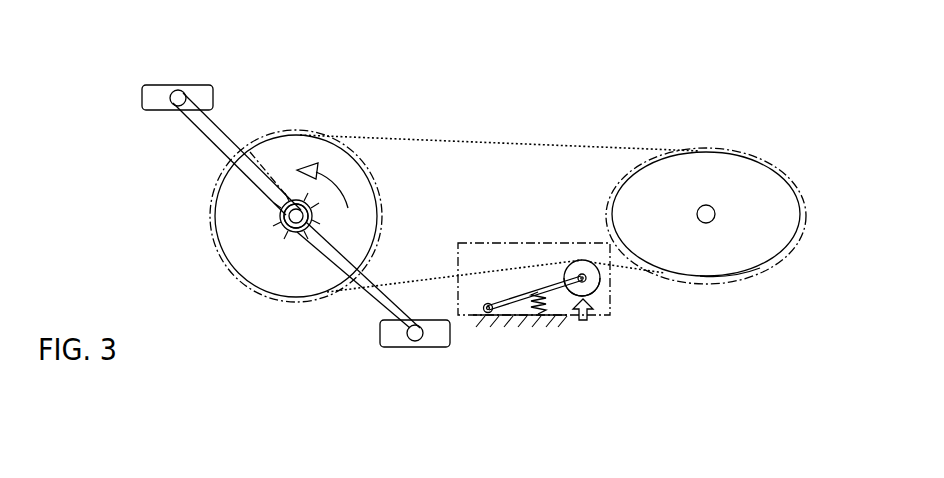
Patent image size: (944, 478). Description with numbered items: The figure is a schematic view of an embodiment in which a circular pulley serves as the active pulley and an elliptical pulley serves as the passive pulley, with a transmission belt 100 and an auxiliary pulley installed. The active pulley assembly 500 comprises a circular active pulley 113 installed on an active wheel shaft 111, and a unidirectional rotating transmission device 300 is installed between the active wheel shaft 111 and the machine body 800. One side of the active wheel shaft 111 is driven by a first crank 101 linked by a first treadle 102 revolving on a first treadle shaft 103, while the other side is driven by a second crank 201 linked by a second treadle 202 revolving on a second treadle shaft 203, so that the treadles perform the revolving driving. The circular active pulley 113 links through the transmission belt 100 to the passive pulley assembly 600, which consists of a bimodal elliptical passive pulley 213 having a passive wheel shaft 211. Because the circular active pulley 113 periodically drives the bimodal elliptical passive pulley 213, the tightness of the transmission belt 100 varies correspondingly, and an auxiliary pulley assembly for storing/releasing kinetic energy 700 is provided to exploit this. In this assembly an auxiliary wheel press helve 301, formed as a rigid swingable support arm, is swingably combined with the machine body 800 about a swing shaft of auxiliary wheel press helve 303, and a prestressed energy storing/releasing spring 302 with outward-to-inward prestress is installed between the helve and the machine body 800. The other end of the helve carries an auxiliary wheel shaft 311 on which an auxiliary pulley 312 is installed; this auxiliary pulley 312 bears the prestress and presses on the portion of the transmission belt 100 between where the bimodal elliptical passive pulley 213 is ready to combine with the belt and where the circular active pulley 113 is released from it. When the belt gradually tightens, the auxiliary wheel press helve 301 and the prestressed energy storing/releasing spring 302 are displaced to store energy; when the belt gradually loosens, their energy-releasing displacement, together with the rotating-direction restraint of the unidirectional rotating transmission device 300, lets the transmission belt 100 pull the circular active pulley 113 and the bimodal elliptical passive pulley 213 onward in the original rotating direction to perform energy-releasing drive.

The transmission belt 100 is at (495, 142).
The first crank 101 is at (225, 131).
The first treadle 102 is at (142, 97).
The first treadle shaft 103 is at (185, 92).
The active wheel shaft 111 is at (273, 221).
The circular active pulley 113 is at (236, 266).
The second crank 201 is at (377, 293).
The second treadle 202 is at (441, 334).
The second treadle shaft 203 is at (417, 341).
The passive wheel shaft 211 is at (710, 212).
The bimodal elliptical passive pulley 213 is at (745, 277).
The unidirectional rotating transmission device 300 is at (313, 224).
The auxiliary wheel press helve 301 is at (523, 293).
The prestressed energy storing/releasing spring 302 is at (547, 304).
The swing shaft of auxiliary wheel press helve 303 is at (486, 303).
The auxiliary wheel shaft 311 is at (582, 274).
The auxiliary pulley 312 is at (597, 290).
The active pulley assembly 500 is at (280, 130).
The passive pulley assembly 600 is at (786, 172).
The auxiliary pulley assembly for storing/releasing kinetic energy 700 is at (473, 243).
The machine body 800 is at (523, 323).